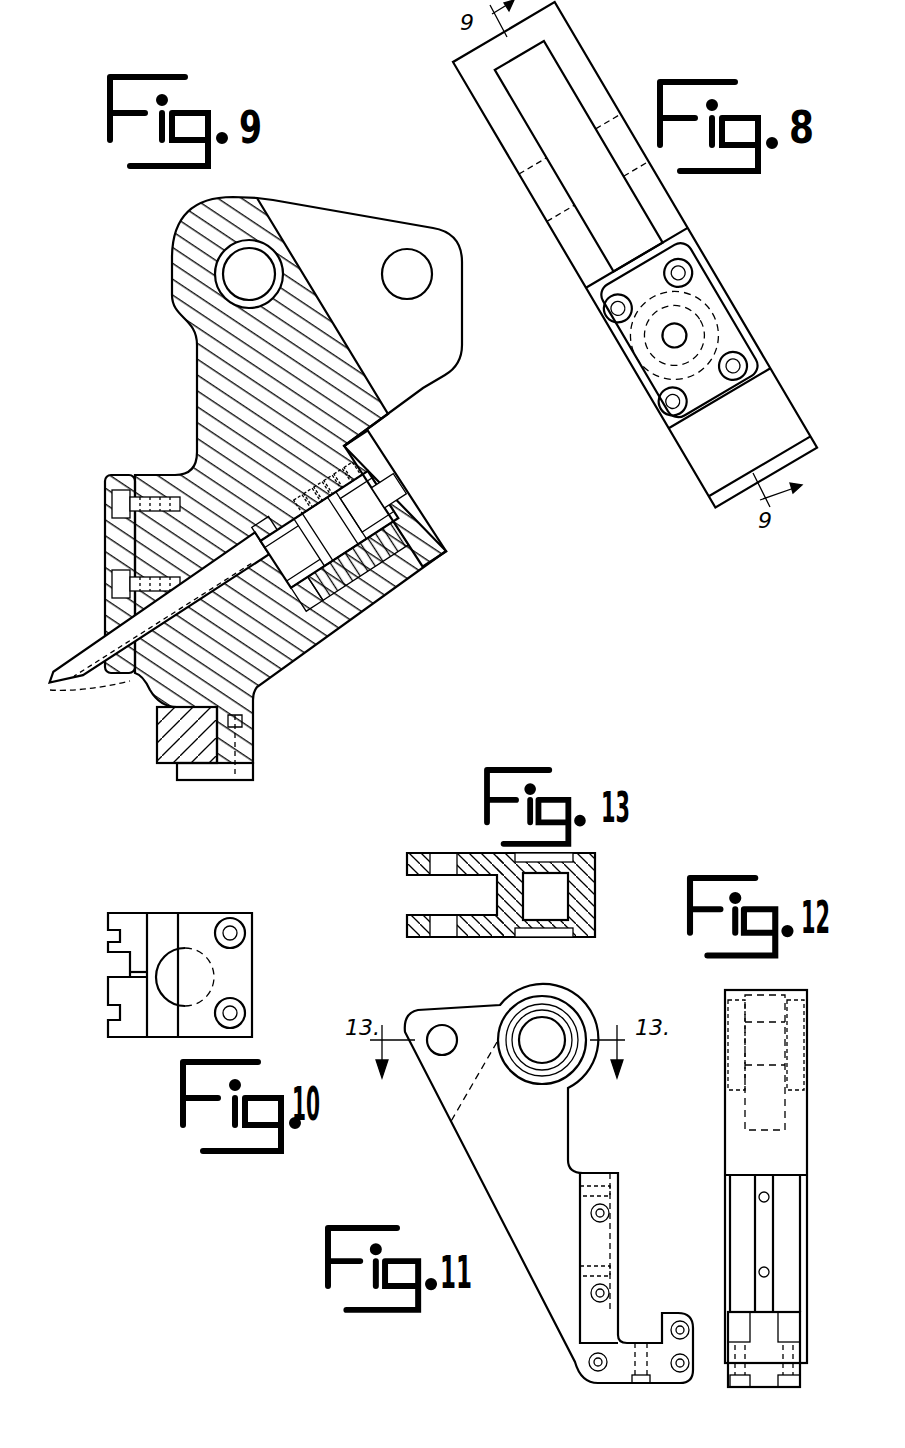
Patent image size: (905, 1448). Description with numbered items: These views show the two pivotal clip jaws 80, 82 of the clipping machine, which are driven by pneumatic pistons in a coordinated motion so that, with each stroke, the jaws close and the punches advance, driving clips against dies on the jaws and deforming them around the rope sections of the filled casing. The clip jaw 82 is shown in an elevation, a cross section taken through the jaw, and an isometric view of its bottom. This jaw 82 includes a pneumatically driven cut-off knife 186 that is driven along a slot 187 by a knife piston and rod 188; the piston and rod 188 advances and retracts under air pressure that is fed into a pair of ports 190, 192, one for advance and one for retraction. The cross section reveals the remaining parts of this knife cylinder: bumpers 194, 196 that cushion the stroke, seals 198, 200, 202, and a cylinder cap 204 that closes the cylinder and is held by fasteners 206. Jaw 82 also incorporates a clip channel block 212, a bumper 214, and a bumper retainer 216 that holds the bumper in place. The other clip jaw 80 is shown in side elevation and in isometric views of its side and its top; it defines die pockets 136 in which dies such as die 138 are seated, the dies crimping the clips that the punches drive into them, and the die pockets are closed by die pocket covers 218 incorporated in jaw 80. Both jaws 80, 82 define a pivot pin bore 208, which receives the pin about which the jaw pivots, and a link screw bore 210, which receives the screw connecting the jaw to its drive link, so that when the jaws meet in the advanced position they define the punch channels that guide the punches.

In FIG. 13, the clip jaw 80 is at (597, 890).
In FIG. 11, the clip jaw 80 is at (568, 1140).
In FIG. 12, the clip jaw 80 is at (807, 1105).
In FIG. 9, the clip jaw 82 is at (435, 353).
In FIG. 8, the clip jaw 82 is at (680, 212).
In FIG. 10, the clip jaw 82 is at (160, 1037).
In FIG. 11, the die pockets 136 is at (663, 1313).
In FIG. 12, the die pockets 136 is at (725, 1325).
In FIG. 11, the die 138 is at (627, 1330).
In FIG. 9, the cut-off knife 186 is at (290, 692).
In FIG. 10, the slot 187 is at (108, 973).
In FIG. 9, the knife piston and rod 188 is at (333, 625).
In FIG. 9, the port 190 is at (410, 488).
In FIG. 9, the port 192 is at (313, 645).
In FIG. 9, the bumper 194 is at (425, 513).
In FIG. 9, the bumper 196 is at (352, 592).
In FIG. 9, the seal 198 is at (430, 540).
In FIG. 9, the seal 200 is at (410, 568).
In FIG. 9, the seal 202 is at (197, 428).
In FIG. 9, the cylinder cap 204 is at (378, 468).
In FIG. 8, the cylinder cap 204 is at (697, 287).
In FIG. 8, the fasteners 206 is at (740, 353).
In FIG. 9, the pivot pin bore 208 is at (263, 242).
In FIG. 11, the pivot pin bore 208 is at (545, 1035).
In FIG. 9, the link screw bore 210 is at (423, 252).
In FIG. 11, the link screw bore 210 is at (442, 1025).
In FIG. 9, the clip channel block 212 is at (105, 545).
In FIG. 9, the bumper 214 is at (163, 742).
In FIG. 9, the bumper retainer 216 is at (207, 770).
In FIG. 11, the die pocket covers 218 is at (598, 1237).
In FIG. 12, the die pocket covers 218 is at (725, 1190).